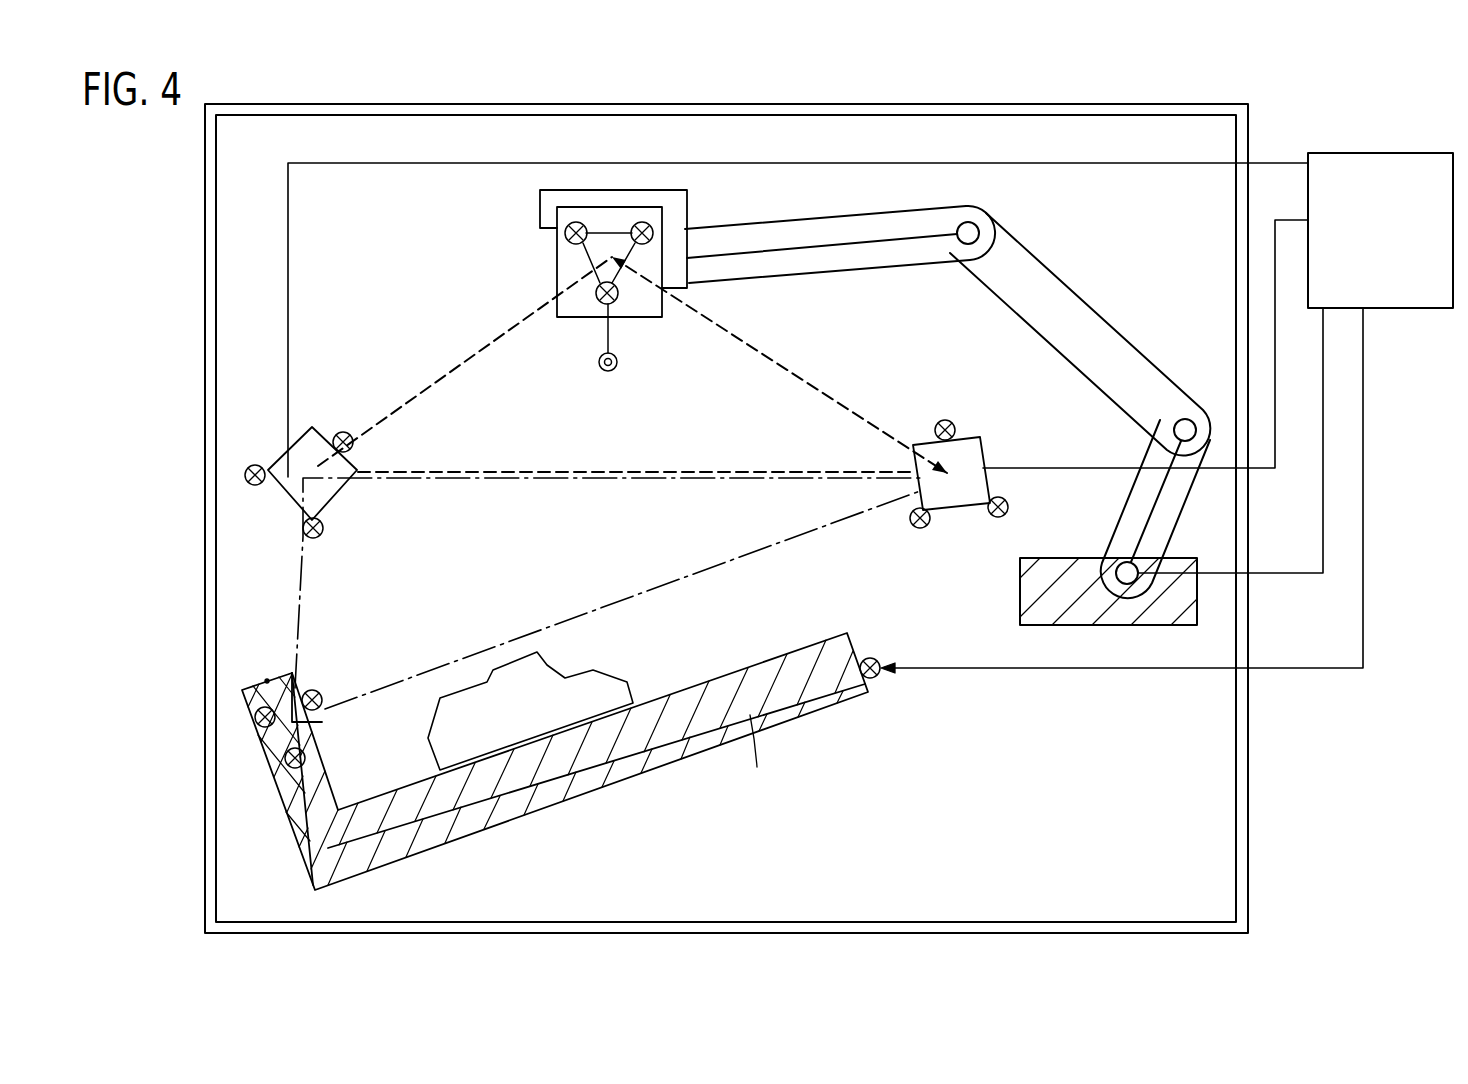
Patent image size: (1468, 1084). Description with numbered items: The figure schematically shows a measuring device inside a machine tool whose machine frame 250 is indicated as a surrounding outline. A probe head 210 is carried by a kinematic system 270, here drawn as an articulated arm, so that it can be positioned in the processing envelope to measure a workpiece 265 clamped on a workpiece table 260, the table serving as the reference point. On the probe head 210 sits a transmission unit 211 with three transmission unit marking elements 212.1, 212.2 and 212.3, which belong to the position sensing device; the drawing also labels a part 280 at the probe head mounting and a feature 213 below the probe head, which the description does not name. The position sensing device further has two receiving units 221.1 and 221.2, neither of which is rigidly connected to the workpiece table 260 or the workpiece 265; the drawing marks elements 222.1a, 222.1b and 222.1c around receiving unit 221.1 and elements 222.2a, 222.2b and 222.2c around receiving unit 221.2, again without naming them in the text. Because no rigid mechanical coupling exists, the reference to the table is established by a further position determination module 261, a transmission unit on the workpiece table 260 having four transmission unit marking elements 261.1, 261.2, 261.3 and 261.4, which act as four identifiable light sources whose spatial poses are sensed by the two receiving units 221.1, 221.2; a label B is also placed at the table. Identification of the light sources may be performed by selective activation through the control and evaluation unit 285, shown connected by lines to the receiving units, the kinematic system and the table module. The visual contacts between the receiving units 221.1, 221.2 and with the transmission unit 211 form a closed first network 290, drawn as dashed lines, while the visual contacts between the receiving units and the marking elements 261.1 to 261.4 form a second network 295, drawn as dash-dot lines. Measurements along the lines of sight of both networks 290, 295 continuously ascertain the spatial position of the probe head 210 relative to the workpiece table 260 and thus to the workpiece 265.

The machine frame 250 is at (1250, 820).
The control and evaluation unit 285 is at (1423, 310).
The kinematic system 270 is at (1050, 297).
The holder 280 is at (550, 203).
The probe head 210 is at (650, 318).
The transmission unit 211 is at (583, 258).
The transmission unit marking element 212.1 is at (562, 232).
The transmission unit marking element 212.2 is at (654, 226).
The transmission unit marking element 212.3 is at (605, 306).
The measuring sensor 213 is at (618, 358).
The first network 290 is at (793, 372).
The second network 295 is at (745, 548).
The receiving unit 221.1 is at (287, 487).
The reference marker 222.1a is at (345, 433).
The reference marker 222.1b is at (323, 535).
The reference marker 222.1c is at (245, 475).
The receiving unit 221.2 is at (972, 452).
The reference marker 222.2a is at (944, 419).
The reference marker 222.2b is at (1010, 507).
The reference marker 222.2c is at (923, 530).
The workpiece table 260 is at (602, 775).
The position determination module 261 is at (758, 754).
The transmission unit marking element 261.1 is at (255, 713).
The transmission unit marking element 261.2 is at (322, 704).
The transmission unit marking element 261.3 is at (285, 757).
The transmission unit marking element 261.4 is at (875, 684).
The workpiece 265 is at (540, 668).
The component B is at (265, 680).